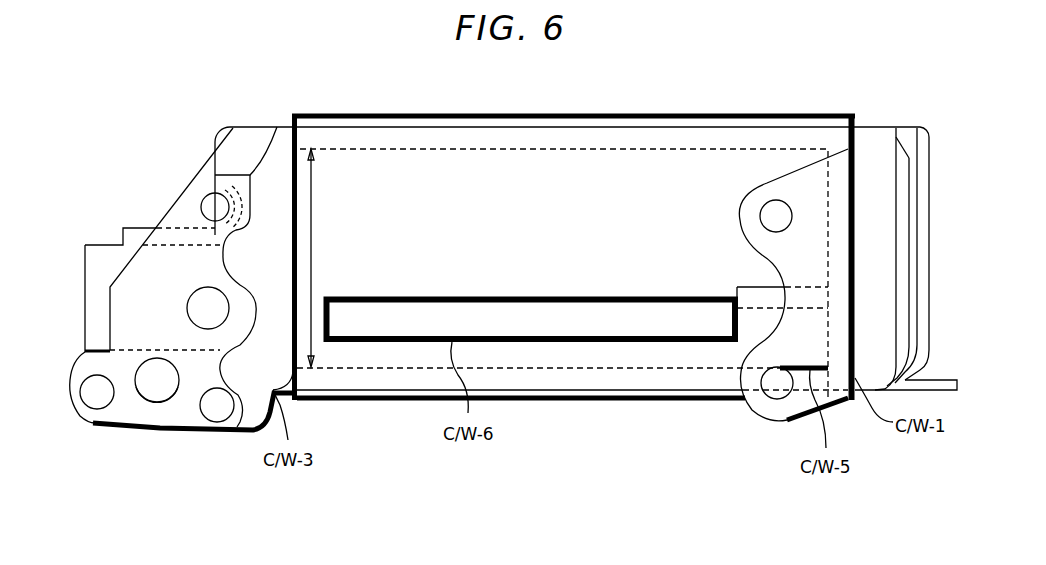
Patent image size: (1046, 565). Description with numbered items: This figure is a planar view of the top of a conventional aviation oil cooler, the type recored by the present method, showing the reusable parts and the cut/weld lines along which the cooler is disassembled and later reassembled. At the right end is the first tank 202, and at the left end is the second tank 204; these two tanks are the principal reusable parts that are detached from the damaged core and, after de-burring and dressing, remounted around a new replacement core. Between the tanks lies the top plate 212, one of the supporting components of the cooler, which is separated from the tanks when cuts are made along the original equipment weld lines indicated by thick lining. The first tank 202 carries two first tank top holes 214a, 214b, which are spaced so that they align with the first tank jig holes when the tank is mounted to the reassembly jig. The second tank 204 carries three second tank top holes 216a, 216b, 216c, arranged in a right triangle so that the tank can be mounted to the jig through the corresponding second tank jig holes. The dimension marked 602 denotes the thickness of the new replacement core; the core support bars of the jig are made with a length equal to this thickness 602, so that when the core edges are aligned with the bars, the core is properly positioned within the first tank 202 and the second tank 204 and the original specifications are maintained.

The first tank 202 is at (874, 148).
The second tank 204 is at (265, 182).
The top plate 212 is at (570, 318).
The first tank top hole 214a is at (776, 214).
The first tank top hole 214b is at (775, 388).
The second tank top hole 216a is at (207, 200).
The second tank top hole 216b is at (96, 400).
The second tank top hole 216c is at (216, 415).
The thickness of the new replacement core 602 is at (311, 234).